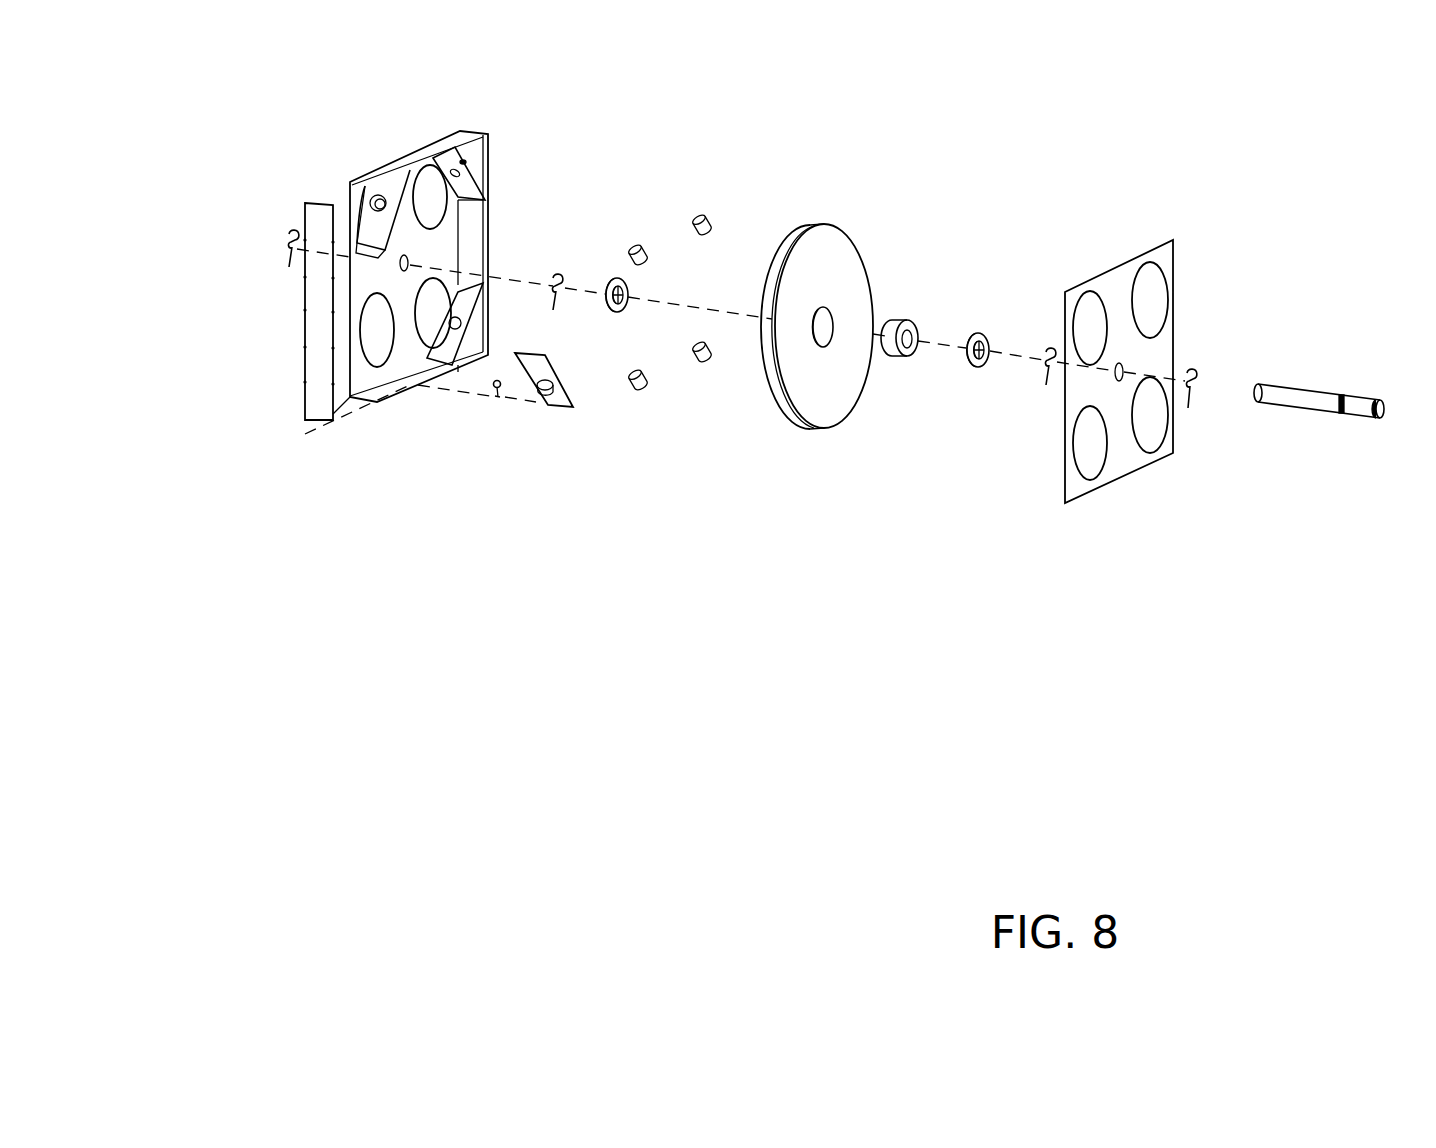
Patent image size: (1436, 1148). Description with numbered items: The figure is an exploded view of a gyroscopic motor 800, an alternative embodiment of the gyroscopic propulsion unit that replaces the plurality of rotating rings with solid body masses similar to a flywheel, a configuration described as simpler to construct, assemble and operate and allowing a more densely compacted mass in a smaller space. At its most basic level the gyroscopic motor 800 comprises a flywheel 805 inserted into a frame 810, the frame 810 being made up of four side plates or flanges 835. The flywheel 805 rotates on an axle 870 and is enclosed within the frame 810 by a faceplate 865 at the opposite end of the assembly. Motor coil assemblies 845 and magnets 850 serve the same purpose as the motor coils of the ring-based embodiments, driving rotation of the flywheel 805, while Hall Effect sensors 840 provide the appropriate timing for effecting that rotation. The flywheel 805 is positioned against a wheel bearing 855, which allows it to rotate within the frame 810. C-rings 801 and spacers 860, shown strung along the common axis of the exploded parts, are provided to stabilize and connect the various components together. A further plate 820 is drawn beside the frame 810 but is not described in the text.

The gyroscopic motor 800 is at (274, 118).
The C-rings 801 is at (288, 270).
The flywheel 805 is at (792, 432).
The frame 810 is at (488, 164).
The plate 820 is at (300, 442).
The side plates or flanges 835 is at (336, 420).
The Hall Effect sensors 840 is at (496, 394).
The motor coil assemblies 845 is at (557, 410).
The magnets 850 is at (699, 367).
The wheel bearing 855 is at (894, 362).
The spacers 860 is at (615, 320).
The faceplate 865 is at (1117, 489).
The axle 870 is at (1359, 414).